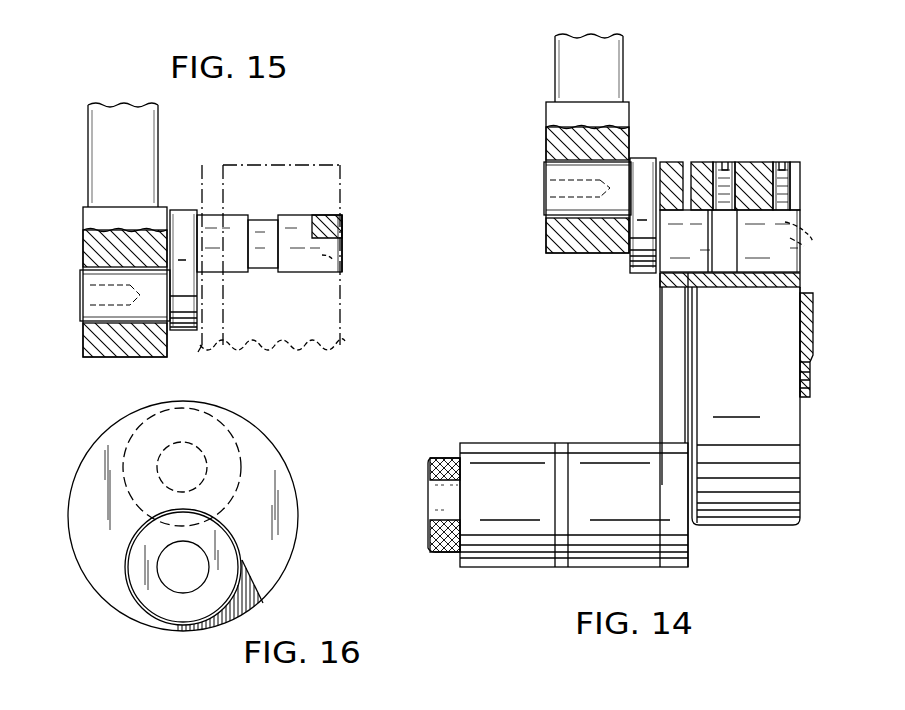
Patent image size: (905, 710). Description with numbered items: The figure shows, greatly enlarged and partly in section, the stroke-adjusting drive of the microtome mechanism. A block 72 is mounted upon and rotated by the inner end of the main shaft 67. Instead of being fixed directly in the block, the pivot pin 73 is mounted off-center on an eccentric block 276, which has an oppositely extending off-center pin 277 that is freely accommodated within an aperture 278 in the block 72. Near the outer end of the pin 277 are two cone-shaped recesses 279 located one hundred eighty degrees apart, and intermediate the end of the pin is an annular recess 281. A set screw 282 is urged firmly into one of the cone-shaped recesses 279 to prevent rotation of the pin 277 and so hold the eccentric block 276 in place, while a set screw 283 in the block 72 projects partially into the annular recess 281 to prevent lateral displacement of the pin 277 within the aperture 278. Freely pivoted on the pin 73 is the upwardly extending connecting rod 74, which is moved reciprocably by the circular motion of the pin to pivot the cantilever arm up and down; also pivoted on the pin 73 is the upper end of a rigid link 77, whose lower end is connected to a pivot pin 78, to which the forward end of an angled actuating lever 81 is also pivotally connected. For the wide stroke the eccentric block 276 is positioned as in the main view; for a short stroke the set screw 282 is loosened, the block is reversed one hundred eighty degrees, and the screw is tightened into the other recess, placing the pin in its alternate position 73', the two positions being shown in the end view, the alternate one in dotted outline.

In FIG. 14, the connecting rod 74 is at (565, 67).
In FIG. 15, the connecting rod 74 is at (103, 155).
In FIG. 14, the pivot pin 73 is at (562, 177).
In FIG. 16, the pivot pin 73 is at (211, 467).
In FIG. 15, the pivot pin (alternate position) 73' is at (93, 282).
In FIG. 16, the pivot pin (alternate position) 73' is at (225, 570).
In FIG. 14, the eccentric block 276 is at (647, 160).
In FIG. 15, the eccentric block 276 is at (180, 210).
In FIG. 16, the eccentric block 276 is at (110, 445).
In FIG. 14, the set screw 283 is at (728, 164).
In FIG. 14, the set screw 282 is at (782, 164).
In FIG. 14, the annular recess 281 is at (726, 260).
In FIG. 15, the annular recess 281 is at (273, 266).
In FIG. 14, the off-center pin 277 is at (800, 216).
In FIG. 15, the off-center pin 277 is at (343, 222).
In FIG. 14, the cone-shaped recesses 279 is at (800, 236).
In FIG. 15, the cone-shaped recesses 279 is at (326, 214).
In FIG. 14, the aperture 278 is at (800, 287).
In FIG. 14, the main shaft 67 is at (813, 386).
In FIG. 14, the block 72 is at (752, 377).
In FIG. 15, the block 72 is at (325, 338).
In FIG. 14, the rigid link 77 is at (660, 366).
In FIG. 15, the rigid link 77 is at (197, 352).
In FIG. 14, the angled actuating lever 81 is at (510, 445).
In FIG. 14, the pivot pin 78 is at (434, 458).